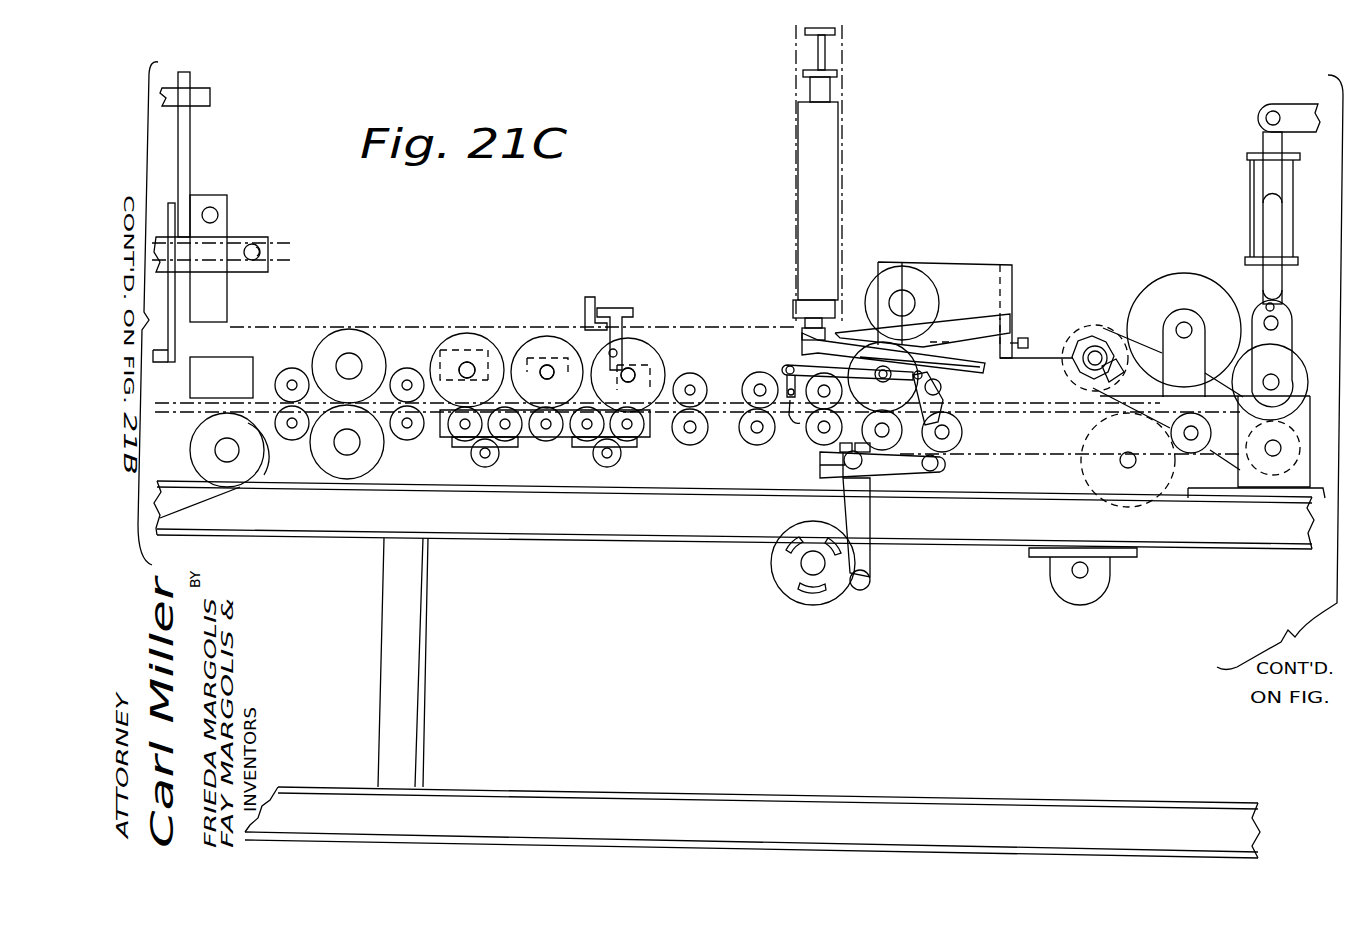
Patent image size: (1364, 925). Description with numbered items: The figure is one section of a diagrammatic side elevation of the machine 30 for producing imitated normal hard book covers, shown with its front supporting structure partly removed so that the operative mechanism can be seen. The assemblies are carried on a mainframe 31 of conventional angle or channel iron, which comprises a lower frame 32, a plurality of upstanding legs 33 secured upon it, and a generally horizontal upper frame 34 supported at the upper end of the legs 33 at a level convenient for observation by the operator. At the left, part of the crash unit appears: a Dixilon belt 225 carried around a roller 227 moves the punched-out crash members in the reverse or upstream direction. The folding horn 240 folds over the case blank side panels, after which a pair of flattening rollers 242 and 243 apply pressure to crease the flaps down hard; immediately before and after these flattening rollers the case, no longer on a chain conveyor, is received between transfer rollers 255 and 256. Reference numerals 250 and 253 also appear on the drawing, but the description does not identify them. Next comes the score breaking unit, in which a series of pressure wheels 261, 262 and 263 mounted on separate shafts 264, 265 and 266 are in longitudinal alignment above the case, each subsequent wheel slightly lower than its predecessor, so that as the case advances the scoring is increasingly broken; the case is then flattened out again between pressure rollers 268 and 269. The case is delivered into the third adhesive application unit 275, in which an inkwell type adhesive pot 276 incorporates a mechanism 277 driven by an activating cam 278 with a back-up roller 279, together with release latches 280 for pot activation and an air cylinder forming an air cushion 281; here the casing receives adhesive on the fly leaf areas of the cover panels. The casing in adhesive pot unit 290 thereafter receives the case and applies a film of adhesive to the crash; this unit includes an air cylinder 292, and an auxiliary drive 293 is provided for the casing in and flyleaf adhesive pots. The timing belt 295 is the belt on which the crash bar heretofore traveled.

The machine 30 is at (689, 186).
The mainframe 31 is at (573, 782).
The lower frame 32 is at (466, 800).
The upstanding legs 33 is at (424, 615).
The upper frame 34 is at (562, 520).
The Dixilon belt 225 is at (234, 243).
The roller 227 is at (259, 251).
The folding horn 240 is at (218, 356).
The flattening roller 242 is at (355, 330).
The flattening roller 243 is at (360, 462).
The rail end 250 is at (203, 503).
The wheel 253 is at (232, 475).
The transfer roller 255 is at (290, 368).
The transfer roller 256 is at (286, 440).
The pressure wheel 261 is at (460, 335).
The pressure wheel 262 is at (540, 340).
The pressure wheel 263 is at (640, 340).
The shaft 264 is at (472, 362).
The shaft 265 is at (552, 365).
The shaft 266 is at (634, 368).
The pressure roller 268 is at (756, 370).
The pressure roller 269 is at (758, 446).
The third adhesive application unit 275 is at (911, 186).
The inkwell type adhesive pot 276 is at (985, 293).
The mechanism 277 is at (940, 486).
The activating cam 278 is at (836, 596).
The back-up roller 279 is at (895, 437).
The release latch 280 is at (946, 402).
The air cylinder air cushion 281 is at (823, 142).
The casing in adhesive pot unit 290 is at (1173, 185).
The air cylinder 292 is at (1253, 170).
The auxiliary drive 293 is at (1263, 468).
The timing belt 295 is at (1038, 412).